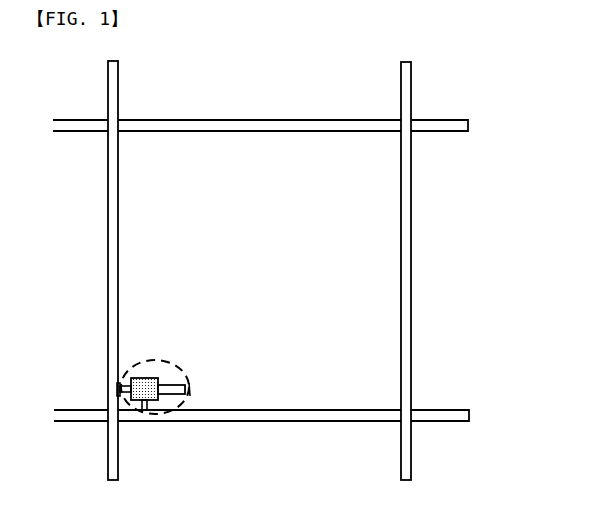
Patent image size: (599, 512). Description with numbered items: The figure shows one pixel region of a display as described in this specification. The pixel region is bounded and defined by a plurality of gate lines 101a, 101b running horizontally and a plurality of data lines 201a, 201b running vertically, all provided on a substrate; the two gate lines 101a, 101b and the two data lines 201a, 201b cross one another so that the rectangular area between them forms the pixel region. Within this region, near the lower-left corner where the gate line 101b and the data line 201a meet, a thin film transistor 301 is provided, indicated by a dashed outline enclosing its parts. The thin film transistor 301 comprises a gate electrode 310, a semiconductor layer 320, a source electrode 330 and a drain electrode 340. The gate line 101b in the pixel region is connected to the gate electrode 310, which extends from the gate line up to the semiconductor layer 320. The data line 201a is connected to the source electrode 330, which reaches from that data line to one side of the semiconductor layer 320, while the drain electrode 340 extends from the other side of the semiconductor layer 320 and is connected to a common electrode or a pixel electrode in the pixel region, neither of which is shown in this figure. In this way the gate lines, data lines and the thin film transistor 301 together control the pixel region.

The gate line 101a is at (460, 120).
The gate line 101b is at (473, 413).
The data line 201a is at (108, 247).
The data line 201b is at (411, 313).
The thin film transistor 301 is at (163, 360).
The gate electrode 310 is at (148, 421).
The semiconductor layer 320 is at (143, 378).
The source electrode 330 is at (116, 388).
The drain electrode 340 is at (190, 390).